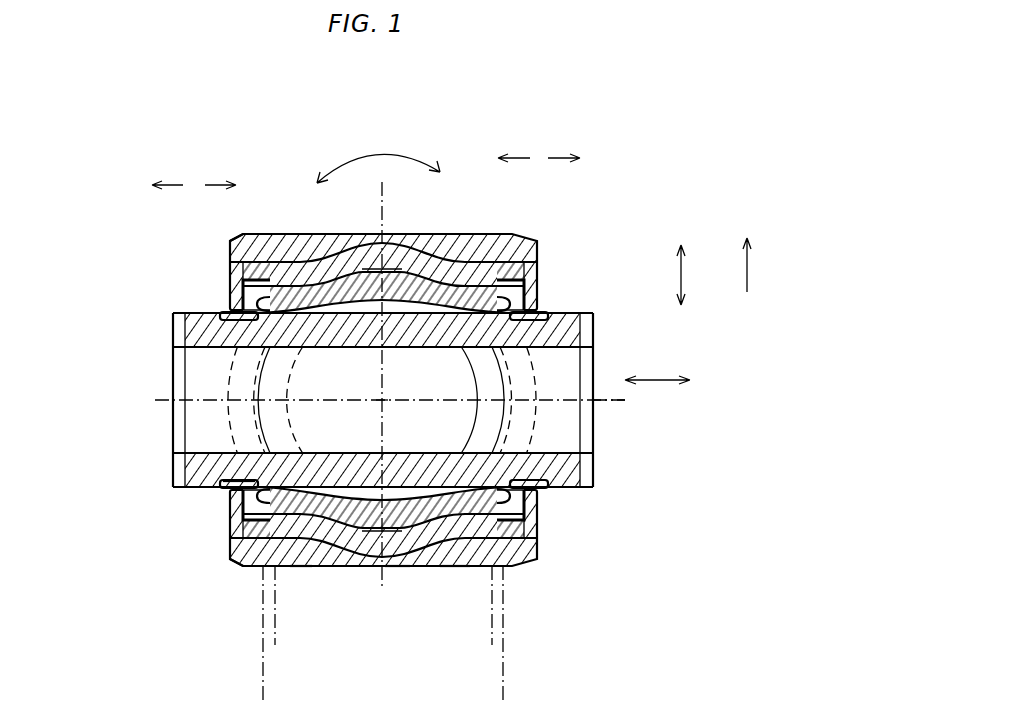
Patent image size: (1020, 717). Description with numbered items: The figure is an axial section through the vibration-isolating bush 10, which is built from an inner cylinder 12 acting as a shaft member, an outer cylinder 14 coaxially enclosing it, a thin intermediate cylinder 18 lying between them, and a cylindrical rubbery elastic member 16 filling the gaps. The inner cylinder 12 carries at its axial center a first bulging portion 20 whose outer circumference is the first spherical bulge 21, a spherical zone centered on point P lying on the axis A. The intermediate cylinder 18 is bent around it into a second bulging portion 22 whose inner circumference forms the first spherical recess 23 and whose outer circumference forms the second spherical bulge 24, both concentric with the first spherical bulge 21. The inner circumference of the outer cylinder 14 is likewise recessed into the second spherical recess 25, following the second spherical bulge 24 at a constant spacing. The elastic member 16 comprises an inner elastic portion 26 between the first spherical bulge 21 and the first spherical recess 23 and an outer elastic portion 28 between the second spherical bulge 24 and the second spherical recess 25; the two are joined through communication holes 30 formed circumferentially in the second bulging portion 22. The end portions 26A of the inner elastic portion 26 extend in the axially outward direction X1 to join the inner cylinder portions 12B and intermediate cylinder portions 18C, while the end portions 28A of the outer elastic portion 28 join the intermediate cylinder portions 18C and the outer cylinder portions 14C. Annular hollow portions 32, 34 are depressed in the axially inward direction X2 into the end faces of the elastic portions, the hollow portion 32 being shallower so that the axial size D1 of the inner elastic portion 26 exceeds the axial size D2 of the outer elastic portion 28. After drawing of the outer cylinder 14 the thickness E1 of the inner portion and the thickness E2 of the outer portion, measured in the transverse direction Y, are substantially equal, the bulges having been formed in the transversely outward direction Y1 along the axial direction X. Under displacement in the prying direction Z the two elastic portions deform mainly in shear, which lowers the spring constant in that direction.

The vibration-isolating bush 10 is at (311, 110).
The inner cylinder 12 is at (577, 479).
The inner cylinder portions 12B is at (238, 350).
The outer cylinder 14 is at (498, 233).
The outer cylinder portions 14C is at (270, 233).
The rubbery elastic member 16 is at (616, 247).
The intermediate cylinder 18 is at (241, 298).
The intermediate cylinder portions 18C is at (382, 400).
The first bulging portion 20 is at (336, 260).
The first spherical bulge 21 is at (396, 463).
The second bulging portion 22 is at (427, 243).
The first spherical recess 23 is at (445, 463).
The second spherical bulge 24 is at (452, 568).
The second spherical recess 25 is at (395, 568).
The inner elastic portion 26 is at (538, 306).
The end portions of inner elastic portion 26A is at (238, 322).
The outer elastic portion 28 is at (538, 272).
The end portions of outer elastic portion 28A is at (288, 254).
The communication holes 30 is at (379, 266).
The hollow portion 32 is at (236, 311).
The hollow portion 34 is at (231, 247).
The axis A is at (598, 404).
The center P is at (399, 393).
The axial size of inner elastic portion D1 is at (491, 692).
The axial size of outer elastic portion D2 is at (480, 632).
The thickness of inner elastic portion E1 is at (262, 500).
The thickness of outer elastic portion E2 is at (300, 572).
The axial direction X is at (657, 366).
The axially outward direction X1 is at (566, 156).
The axially inward direction X2 is at (518, 156).
The transverse direction Y is at (691, 275).
The transversely outward direction Y1 is at (765, 265).
The prying direction Z is at (373, 150).